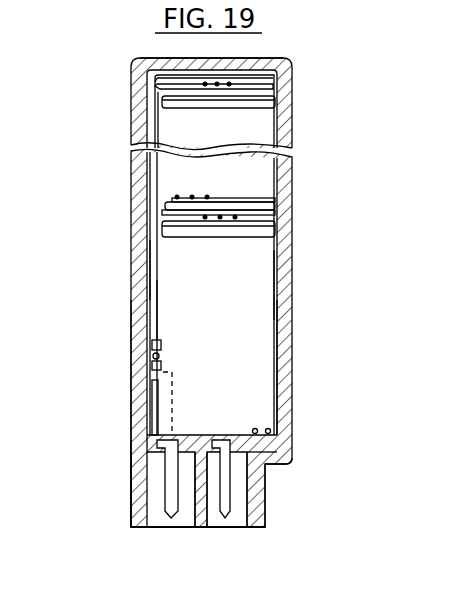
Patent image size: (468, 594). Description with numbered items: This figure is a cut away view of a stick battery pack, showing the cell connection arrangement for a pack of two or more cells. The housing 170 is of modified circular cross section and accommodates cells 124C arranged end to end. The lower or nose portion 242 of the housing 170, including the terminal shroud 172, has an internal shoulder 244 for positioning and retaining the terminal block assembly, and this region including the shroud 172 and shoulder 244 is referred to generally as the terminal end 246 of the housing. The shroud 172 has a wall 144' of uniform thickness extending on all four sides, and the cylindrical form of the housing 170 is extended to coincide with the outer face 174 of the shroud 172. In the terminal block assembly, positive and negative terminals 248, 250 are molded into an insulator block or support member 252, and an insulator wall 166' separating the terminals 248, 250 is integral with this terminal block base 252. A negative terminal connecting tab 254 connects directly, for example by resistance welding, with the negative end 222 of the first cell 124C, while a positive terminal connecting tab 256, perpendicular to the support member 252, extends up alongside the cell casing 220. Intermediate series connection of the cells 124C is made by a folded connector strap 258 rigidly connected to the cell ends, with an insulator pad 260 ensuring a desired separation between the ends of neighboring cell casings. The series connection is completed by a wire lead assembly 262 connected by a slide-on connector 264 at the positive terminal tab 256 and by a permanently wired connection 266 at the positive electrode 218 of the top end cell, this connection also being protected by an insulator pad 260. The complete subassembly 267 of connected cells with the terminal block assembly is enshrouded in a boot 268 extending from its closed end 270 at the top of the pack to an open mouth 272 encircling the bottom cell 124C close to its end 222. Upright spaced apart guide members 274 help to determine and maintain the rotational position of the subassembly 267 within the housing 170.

The housing 170 is at (124, 112).
The cell 124C is at (278, 177).
The nose portion 242 is at (112, 352).
The terminal end 246 is at (120, 444).
The shroud 172 is at (117, 508).
The outer face 174 is at (131, 478).
The wall 144' is at (255, 518).
The insulator block 252 is at (268, 500).
The internal shoulder 244 is at (280, 466).
The cylindrical casing 220 is at (284, 376).
The boot 268 is at (147, 182).
The wire lead assembly 262 is at (148, 264).
The slide-on connector 264 is at (147, 306).
The subassembly 267 is at (283, 279).
The permanently wired connection 266 is at (178, 78).
The positive electrode 218 is at (242, 86).
The closed end 270 is at (245, 58).
The insulator pad 260 is at (265, 72).
The folded connector strap 258 is at (170, 212).
The positive terminal connecting tab 256 is at (150, 400).
The guide members 274 is at (186, 392).
The positive terminal 248 is at (160, 490).
The negative terminal 250 is at (228, 465).
The insulator wall 166' is at (198, 520).
The negative electrode 222 is at (197, 440).
The negative terminal connecting tab 254 is at (276, 426).
The open mouth 272 is at (283, 448).